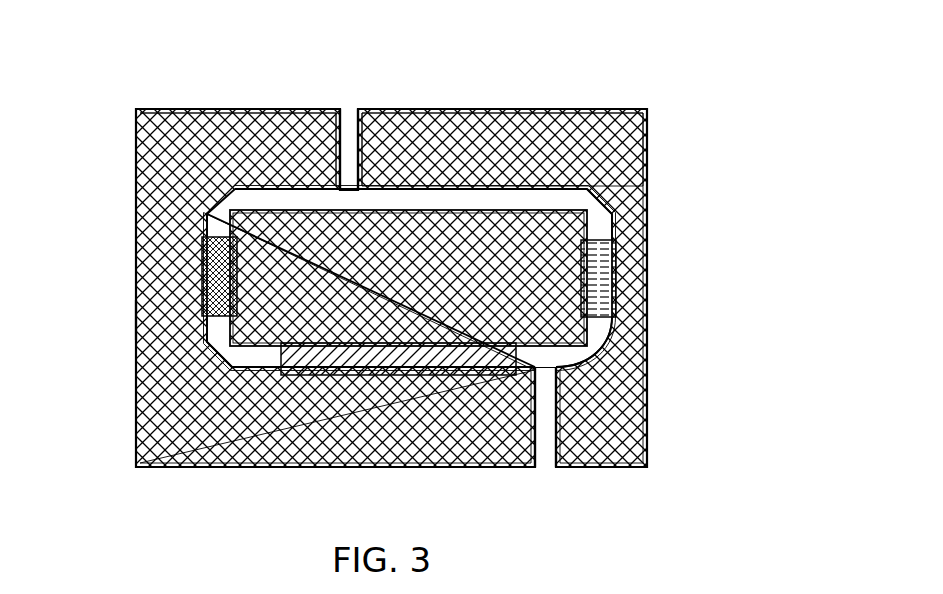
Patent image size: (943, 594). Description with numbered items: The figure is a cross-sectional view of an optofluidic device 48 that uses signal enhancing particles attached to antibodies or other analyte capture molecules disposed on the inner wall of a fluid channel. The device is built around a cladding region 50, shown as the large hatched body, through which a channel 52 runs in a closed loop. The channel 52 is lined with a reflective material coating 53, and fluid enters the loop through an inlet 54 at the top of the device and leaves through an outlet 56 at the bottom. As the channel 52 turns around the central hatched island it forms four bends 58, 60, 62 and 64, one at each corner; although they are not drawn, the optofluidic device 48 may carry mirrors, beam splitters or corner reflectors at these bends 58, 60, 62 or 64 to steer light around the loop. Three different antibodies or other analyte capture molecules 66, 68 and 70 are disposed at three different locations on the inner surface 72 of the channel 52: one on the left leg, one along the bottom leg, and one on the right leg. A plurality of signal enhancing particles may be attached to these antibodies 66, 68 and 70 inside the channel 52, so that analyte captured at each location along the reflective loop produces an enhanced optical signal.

The optofluidic device 48 is at (667, 73).
The cladding region 50 is at (170, 115).
The channel 52 is at (500, 188).
The reflective material coating 53 is at (290, 187).
The inlet 54 is at (350, 105).
The outlet 56 is at (548, 453).
The bend 58 is at (203, 185).
The bend 60 is at (603, 202).
The bend 62 is at (618, 380).
The bend 64 is at (207, 380).
The antibody or analyte capture molecule 66 is at (198, 278).
The antibody or analyte capture molecule 68 is at (413, 378).
The antibody or analyte capture molecule 70 is at (608, 285).
The inner surface 72 is at (228, 230).